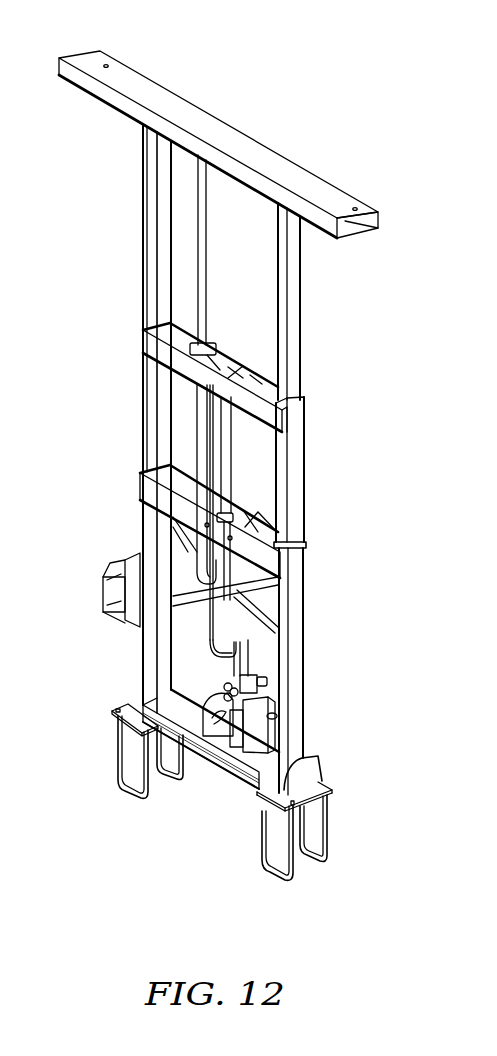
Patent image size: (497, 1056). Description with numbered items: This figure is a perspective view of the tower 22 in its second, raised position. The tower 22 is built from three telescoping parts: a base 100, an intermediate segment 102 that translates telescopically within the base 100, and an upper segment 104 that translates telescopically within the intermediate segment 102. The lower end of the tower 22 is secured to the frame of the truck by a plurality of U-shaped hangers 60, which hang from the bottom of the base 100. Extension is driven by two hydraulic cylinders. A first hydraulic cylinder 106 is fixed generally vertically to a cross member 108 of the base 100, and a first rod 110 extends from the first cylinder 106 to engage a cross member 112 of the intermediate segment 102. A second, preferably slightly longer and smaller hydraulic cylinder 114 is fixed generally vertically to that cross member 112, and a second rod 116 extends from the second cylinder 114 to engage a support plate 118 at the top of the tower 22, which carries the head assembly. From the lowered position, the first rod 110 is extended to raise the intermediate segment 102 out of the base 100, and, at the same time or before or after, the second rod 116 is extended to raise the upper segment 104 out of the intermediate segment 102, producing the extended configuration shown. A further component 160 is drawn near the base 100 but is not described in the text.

The tower 22 is at (248, 64).
The support plate 118 is at (270, 165).
The second rod 116 is at (200, 217).
The second hydraulic cylinder 114 is at (200, 427).
The cross member 112 is at (150, 345).
The first rod 110 is at (227, 479).
The cross member 108 is at (274, 566).
The first hydraulic cylinder 106 is at (231, 646).
The upper segment 104 is at (297, 303).
The intermediate segment 102 is at (297, 507).
The base 100 is at (300, 672).
The drive mechanism 160 is at (220, 730).
The U-shaped hangers 60 is at (327, 857).